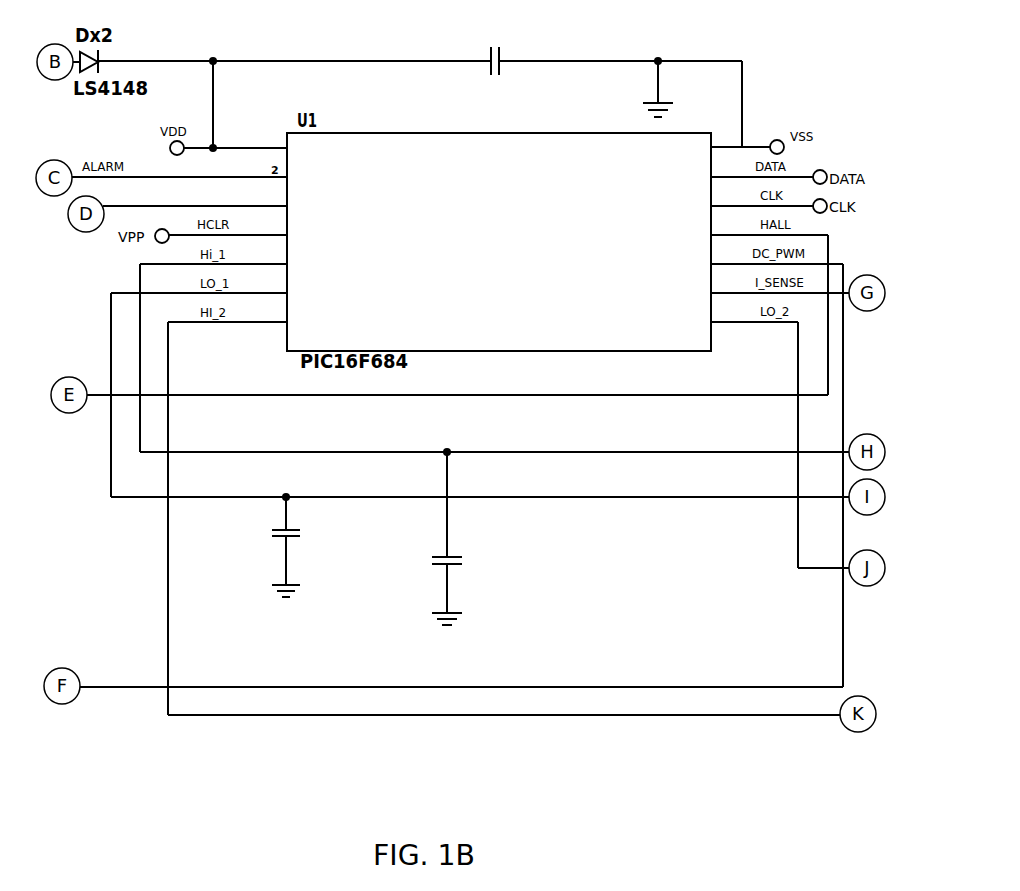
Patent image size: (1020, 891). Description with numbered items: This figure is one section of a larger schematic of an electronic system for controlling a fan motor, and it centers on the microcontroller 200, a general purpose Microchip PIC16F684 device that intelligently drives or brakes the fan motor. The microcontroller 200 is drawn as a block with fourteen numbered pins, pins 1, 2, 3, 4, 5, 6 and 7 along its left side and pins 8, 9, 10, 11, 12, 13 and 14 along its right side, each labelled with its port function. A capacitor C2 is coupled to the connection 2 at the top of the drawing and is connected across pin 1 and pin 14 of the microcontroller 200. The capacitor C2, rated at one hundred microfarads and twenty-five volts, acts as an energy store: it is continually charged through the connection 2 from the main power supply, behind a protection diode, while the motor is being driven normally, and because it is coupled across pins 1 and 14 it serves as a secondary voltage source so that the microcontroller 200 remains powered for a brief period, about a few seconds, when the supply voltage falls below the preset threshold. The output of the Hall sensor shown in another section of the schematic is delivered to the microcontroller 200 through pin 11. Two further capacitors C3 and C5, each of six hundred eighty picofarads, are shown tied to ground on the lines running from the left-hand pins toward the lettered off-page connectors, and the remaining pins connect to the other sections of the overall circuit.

The connection 2 is at (148, 62).
The microcontroller 200 is at (499, 242).
The capacitor C2 is at (559, 76).
The capacitor C3 (680pF) C3 is at (321, 547).
The capacitor C5 (680pF) C5 is at (481, 538).
The pin 1 is at (250, 141).
The microcontroller pin 3 is at (195, 199).
The microcontroller pin 4 is at (228, 228).
The microcontroller pin 5 is at (213, 257).
The microcontroller pin 6 is at (199, 286).
The microcontroller pin 7 is at (227, 315).
The microcontroller pin 8 is at (755, 315).
The microcontroller pin 9 is at (780, 286).
The microcontroller pin 10 is at (777, 257).
The pin 11 is at (770, 228).
The microcontroller pin 12 is at (762, 199).
The microcontroller pin 13 is at (762, 170).
The pin 14 is at (741, 140).